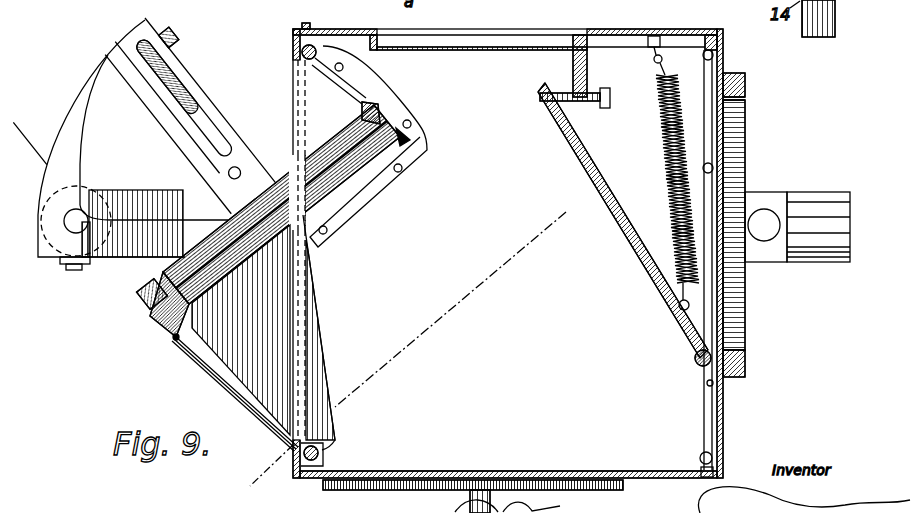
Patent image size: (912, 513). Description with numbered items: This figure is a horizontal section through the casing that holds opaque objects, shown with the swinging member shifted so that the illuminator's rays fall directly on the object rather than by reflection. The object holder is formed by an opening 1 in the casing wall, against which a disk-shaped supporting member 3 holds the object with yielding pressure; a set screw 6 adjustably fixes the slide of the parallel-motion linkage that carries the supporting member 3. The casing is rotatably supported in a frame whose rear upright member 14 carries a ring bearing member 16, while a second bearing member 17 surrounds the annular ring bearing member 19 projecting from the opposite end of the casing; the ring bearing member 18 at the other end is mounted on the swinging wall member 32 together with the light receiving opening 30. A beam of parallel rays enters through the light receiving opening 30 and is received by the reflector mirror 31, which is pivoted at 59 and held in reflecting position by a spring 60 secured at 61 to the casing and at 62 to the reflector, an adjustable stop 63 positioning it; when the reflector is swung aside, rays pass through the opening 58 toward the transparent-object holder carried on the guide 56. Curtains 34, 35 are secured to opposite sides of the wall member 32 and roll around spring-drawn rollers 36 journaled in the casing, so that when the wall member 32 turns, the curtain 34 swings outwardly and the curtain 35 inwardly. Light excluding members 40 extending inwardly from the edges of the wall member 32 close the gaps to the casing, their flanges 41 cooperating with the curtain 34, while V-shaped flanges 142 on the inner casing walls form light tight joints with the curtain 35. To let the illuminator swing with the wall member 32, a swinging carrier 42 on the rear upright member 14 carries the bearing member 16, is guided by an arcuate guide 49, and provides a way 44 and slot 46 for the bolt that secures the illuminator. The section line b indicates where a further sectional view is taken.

The opening 1 is at (596, 480).
The supporting member 3 is at (547, 485).
The set screw 6 is at (262, 473).
The rear upright member 14 is at (133, 138).
The bearing member 16 is at (142, 302).
The bearing member 17 is at (742, 80).
The ring bearing member 18 is at (160, 288).
The ring bearing member 19 is at (745, 98).
The light receiving opening 30 is at (333, 138).
The reflector mirror 31 is at (637, 260).
The swinging wall member 32 is at (398, 127).
The curtain 34 is at (238, 403).
The curtain 35 is at (352, 96).
The rollers 36 is at (302, 56).
The light excluding members 40 is at (323, 328).
The flanges 41 is at (222, 382).
The swinging carrier 42 is at (149, 145).
The way 44 is at (184, 98).
The slot 46 is at (167, 76).
The arcuate guide 49 is at (84, 212).
The guide 56 is at (818, 210).
The opening 58 is at (750, 133).
The pivot 59 is at (723, 370).
The spring 60 is at (657, 122).
The spring anchorage 61 is at (653, 59).
The spring connection 62 is at (690, 304).
The adjustable stop 63 is at (563, 93).
The V-shaped flanges 142 is at (416, 147).
The section line b— b is at (454, 304).